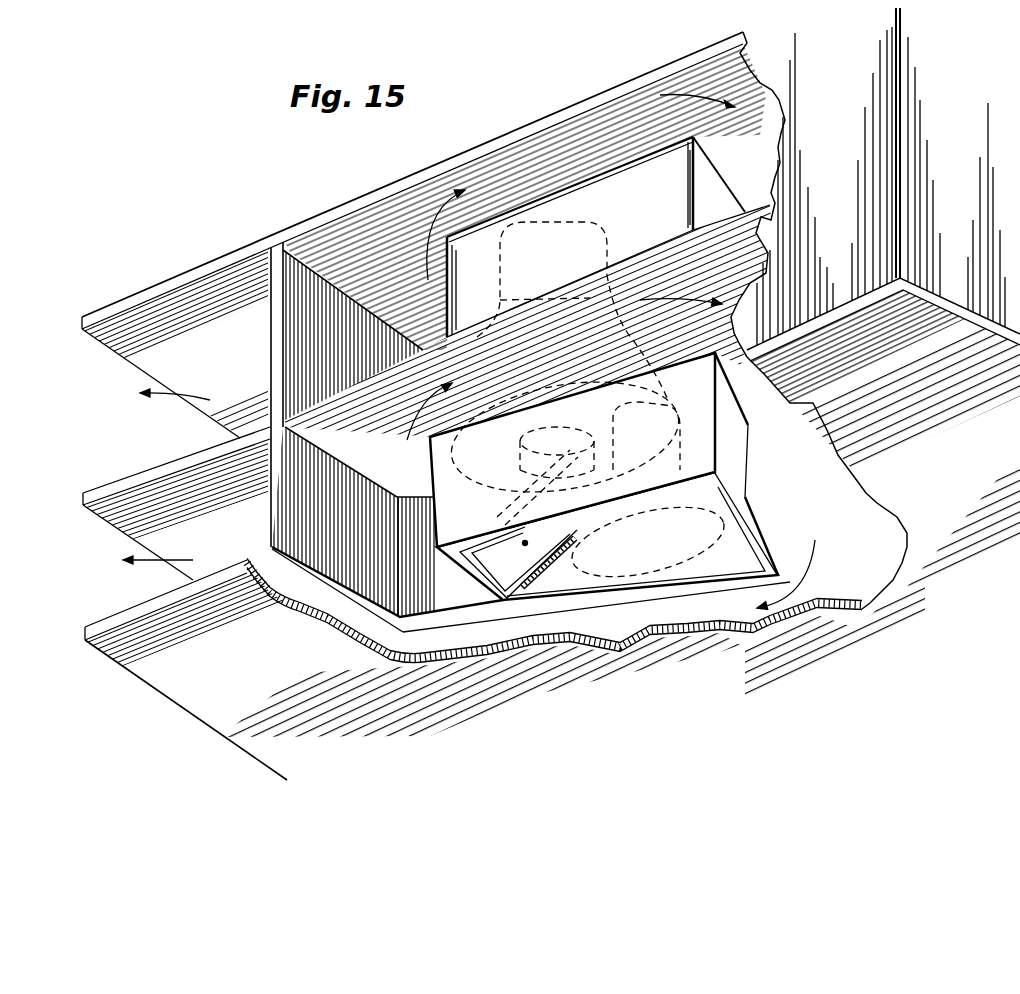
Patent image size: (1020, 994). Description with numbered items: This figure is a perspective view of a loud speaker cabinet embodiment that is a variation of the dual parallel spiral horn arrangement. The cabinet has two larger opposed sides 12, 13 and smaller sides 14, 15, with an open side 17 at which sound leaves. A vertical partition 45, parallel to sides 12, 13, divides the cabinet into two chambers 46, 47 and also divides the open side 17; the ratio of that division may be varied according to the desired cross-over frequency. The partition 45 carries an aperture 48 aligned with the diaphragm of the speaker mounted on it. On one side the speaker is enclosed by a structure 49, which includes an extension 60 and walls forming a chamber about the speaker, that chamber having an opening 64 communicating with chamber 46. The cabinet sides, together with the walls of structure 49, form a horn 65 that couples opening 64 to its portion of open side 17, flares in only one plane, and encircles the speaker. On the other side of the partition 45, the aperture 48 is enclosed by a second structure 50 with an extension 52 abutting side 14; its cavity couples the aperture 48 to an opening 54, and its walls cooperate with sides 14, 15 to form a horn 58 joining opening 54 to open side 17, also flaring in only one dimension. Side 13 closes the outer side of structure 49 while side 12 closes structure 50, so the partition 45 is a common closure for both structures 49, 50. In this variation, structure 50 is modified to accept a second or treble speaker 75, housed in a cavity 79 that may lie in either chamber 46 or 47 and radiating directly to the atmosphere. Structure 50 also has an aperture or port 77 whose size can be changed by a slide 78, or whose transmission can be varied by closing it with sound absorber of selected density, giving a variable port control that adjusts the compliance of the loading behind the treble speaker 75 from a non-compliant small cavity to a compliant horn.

The side 12 is at (945, 470).
The side 13 is at (557, 118).
The side 14 is at (855, 216).
The side 15 is at (975, 225).
The open side 17 is at (90, 400).
The vertical partition 45 is at (107, 487).
The chamber 46 is at (190, 307).
The chamber 47 is at (123, 560).
The aperture 48 is at (565, 373).
The structure 49 is at (488, 228).
The structure 50 is at (733, 450).
The extension 52 is at (273, 483).
The opening 54 is at (390, 465).
The horn 58 is at (875, 582).
The extension 60 is at (290, 250).
The opening 64 is at (392, 290).
The horn 65 is at (757, 167).
The second or treble speaker 75 is at (707, 580).
The aperture or port 77 is at (510, 583).
The slide 78 is at (545, 580).
The cavity 79 is at (595, 580).